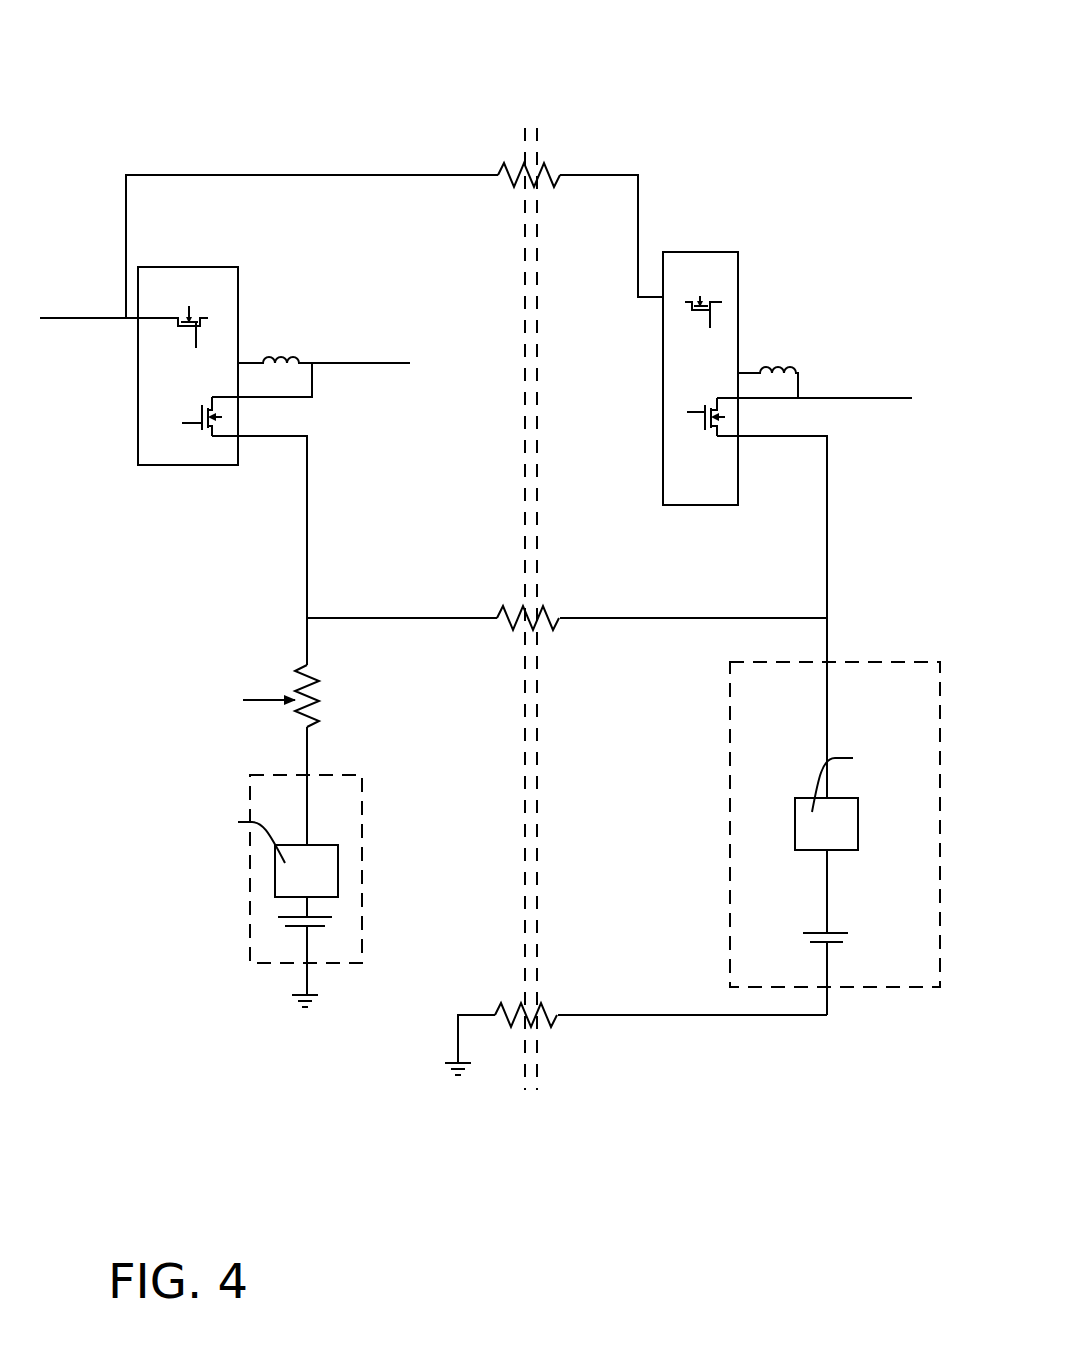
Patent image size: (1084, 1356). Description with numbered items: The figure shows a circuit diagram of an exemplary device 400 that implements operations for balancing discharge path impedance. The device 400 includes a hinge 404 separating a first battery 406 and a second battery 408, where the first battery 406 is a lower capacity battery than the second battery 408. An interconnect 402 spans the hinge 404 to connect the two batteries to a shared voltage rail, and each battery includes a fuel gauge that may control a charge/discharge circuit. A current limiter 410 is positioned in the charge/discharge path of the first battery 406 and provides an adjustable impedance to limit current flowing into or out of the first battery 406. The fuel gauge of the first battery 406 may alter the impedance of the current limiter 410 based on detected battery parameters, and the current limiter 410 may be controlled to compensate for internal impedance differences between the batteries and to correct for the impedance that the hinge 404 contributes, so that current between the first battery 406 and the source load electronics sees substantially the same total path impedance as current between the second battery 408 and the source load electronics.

The device 400 is at (813, 35).
The interconnect 402 is at (557, 618).
The hinge 404 is at (527, 442).
The first battery 406 is at (360, 843).
The second battery 408 is at (730, 822).
The current limiter 410 is at (362, 677).